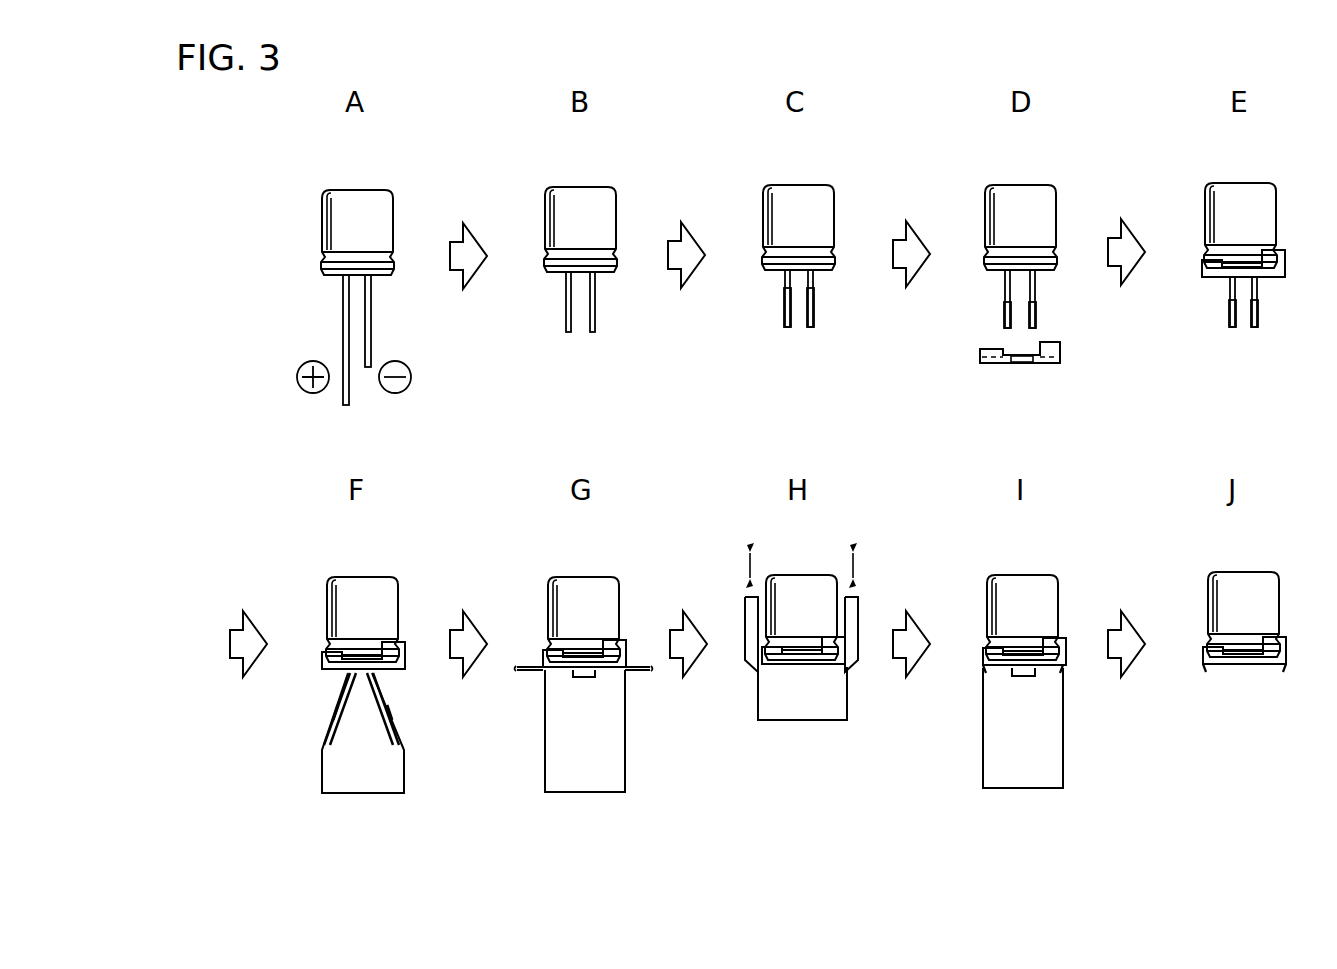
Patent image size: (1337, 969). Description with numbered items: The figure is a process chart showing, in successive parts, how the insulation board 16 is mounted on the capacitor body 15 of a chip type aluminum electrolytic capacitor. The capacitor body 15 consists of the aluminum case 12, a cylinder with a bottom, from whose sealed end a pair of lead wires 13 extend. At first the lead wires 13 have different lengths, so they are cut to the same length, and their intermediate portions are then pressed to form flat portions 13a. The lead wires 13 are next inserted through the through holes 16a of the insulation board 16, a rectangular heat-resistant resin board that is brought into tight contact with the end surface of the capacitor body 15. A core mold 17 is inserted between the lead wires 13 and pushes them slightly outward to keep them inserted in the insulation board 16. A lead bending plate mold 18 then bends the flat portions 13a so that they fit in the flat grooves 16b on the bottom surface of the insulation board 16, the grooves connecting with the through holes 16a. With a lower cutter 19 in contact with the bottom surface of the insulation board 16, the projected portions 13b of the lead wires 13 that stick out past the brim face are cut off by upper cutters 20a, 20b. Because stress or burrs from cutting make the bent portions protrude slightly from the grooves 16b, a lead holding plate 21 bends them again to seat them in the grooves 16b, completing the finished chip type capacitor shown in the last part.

The case 12 is at (384, 214).
The lead wires 13 is at (343, 336).
The flat portions 13a is at (784, 290).
The projected portions 13b is at (538, 676).
The capacitor body 15 is at (322, 202).
The insulation board 16 is at (1056, 346).
The through holes 16a is at (1008, 364).
The flat grooves 16b is at (984, 365).
The core mold 17 is at (379, 786).
The lead bending plate mold 18 is at (598, 782).
The lower cutter 19 is at (806, 718).
The upper cutter 20a is at (856, 620).
The upper cutter 20b is at (748, 620).
The lead holding plate 21 is at (1030, 782).